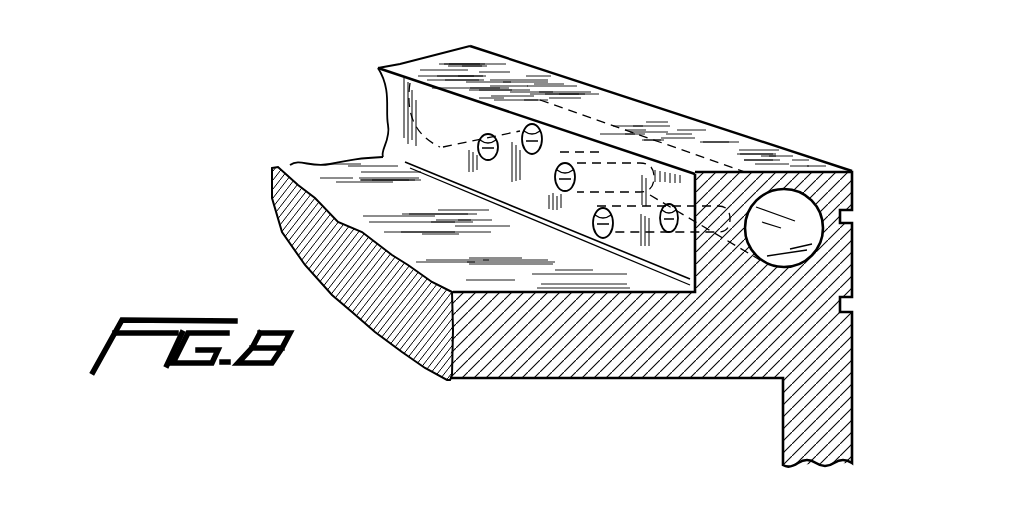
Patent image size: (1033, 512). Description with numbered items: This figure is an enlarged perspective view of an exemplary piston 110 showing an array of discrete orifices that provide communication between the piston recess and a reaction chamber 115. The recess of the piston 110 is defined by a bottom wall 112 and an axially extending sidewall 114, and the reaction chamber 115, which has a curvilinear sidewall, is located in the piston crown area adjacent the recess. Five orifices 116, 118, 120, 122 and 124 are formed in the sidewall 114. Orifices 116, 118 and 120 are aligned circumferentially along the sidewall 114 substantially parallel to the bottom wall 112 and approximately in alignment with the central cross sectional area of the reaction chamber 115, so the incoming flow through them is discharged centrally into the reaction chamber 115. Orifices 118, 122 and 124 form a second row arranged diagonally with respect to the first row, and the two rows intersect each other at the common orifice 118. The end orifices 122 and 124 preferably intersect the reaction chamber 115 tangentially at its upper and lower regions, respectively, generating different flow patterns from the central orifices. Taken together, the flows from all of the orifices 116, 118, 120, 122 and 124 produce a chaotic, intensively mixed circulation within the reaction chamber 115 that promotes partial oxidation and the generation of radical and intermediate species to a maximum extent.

The piston 110 is at (460, 380).
The bottom wall 112 is at (290, 163).
The axially extending sidewall 114 is at (397, 87).
The reaction chamber 115 is at (813, 212).
The orifice 116 is at (485, 135).
The common orifice 118 is at (566, 163).
The orifice 120 is at (670, 233).
The end orifice 122 is at (530, 124).
The end orifice 124 is at (610, 228).